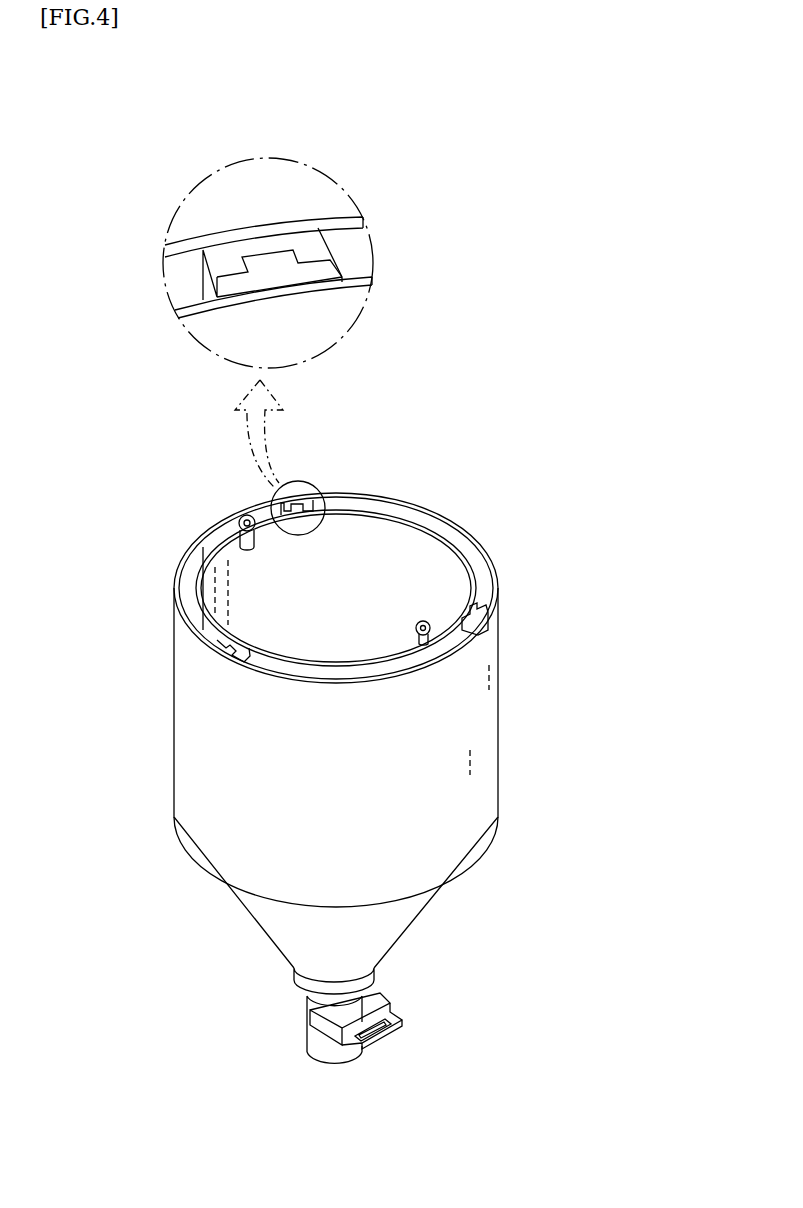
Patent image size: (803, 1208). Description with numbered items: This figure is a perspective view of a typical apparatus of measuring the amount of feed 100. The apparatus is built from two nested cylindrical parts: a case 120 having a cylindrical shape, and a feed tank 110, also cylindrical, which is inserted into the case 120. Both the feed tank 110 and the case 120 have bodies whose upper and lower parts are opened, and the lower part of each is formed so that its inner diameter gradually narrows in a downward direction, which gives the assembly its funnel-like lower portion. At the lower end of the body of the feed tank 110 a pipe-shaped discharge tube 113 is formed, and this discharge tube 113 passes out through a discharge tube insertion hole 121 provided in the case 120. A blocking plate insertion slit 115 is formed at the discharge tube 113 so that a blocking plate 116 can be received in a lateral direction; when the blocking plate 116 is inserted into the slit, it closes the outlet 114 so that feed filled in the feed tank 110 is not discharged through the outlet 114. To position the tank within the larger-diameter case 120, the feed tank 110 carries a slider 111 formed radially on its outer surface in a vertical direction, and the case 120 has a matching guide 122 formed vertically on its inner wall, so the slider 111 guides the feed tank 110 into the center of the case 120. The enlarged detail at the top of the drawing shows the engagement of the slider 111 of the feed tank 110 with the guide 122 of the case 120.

The apparatus of measuring the amount of feed 100 is at (499, 502).
The feed tank 110 is at (467, 568).
The slider 111 is at (265, 268).
The discharge tube 113 is at (317, 1047).
The outlet 114 is at (333, 1068).
The blocking plate insertion slit 115 is at (376, 1001).
The blocking plate 116 is at (403, 1021).
The case 120 is at (424, 507).
The discharge tube insertion hole 121 is at (297, 973).
The guide 122 is at (222, 252).